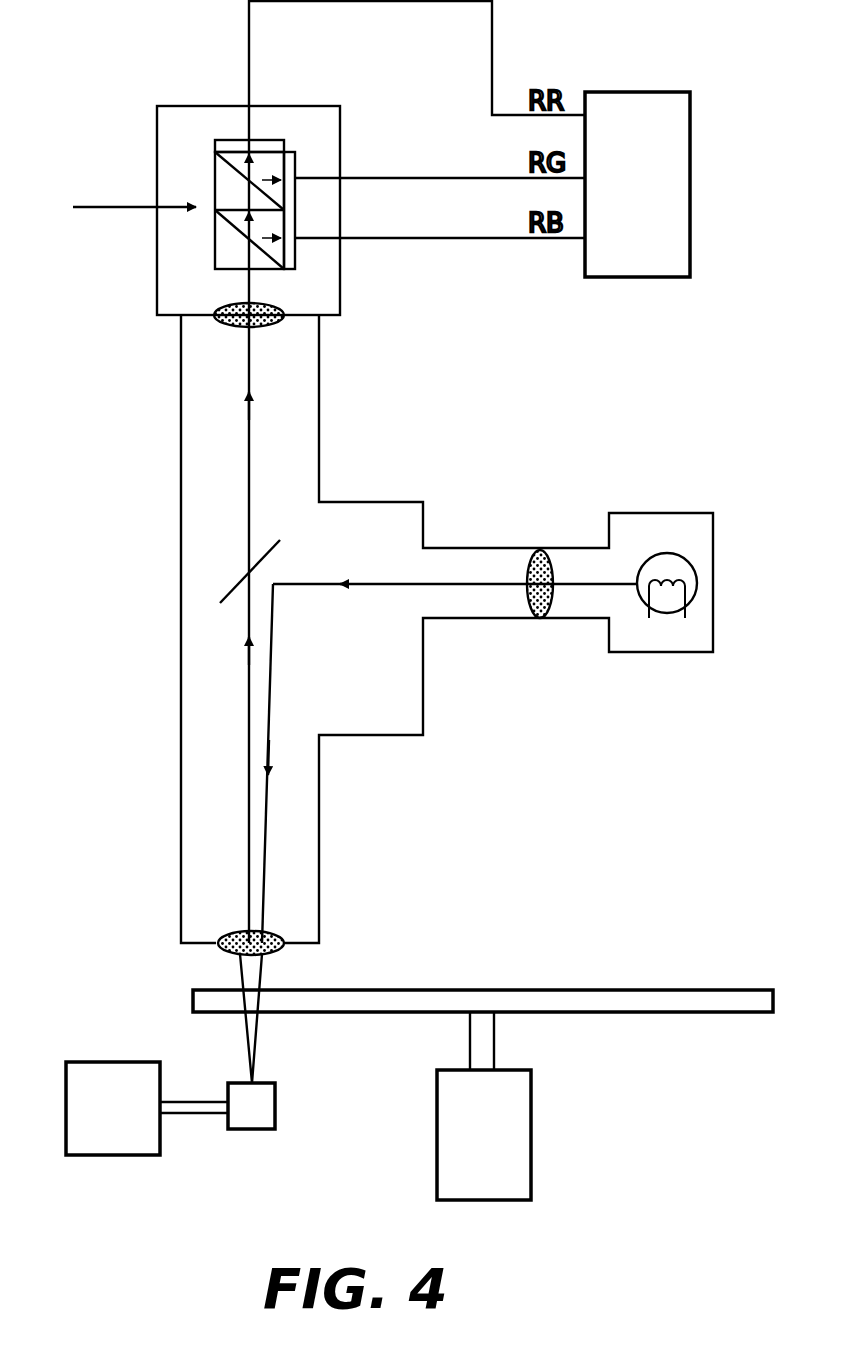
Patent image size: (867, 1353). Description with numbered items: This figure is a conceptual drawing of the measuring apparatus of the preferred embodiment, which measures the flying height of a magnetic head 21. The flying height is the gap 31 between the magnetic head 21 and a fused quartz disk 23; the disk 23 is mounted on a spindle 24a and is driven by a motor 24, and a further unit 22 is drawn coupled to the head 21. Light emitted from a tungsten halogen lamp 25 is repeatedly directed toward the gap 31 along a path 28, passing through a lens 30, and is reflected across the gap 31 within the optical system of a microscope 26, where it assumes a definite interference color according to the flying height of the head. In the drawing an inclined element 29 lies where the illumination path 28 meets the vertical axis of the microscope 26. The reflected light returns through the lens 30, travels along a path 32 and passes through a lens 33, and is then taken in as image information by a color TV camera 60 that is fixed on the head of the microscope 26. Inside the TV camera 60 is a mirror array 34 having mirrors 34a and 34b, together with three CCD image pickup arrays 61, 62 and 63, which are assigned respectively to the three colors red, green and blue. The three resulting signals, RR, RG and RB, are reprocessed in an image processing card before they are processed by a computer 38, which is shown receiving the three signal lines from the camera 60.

The magnetic head 21 is at (268, 1110).
The laser drive circuit 22 is at (147, 1108).
The fused quartz disk 23 is at (711, 1013).
The motor 24 is at (484, 1135).
The spindle 24a is at (496, 1040).
The tungsten halogen lamp 25 is at (690, 562).
The microscope 26 is at (320, 397).
The path 28 is at (274, 680).
The half mirror 29 is at (228, 592).
The lens 30 is at (276, 935).
The gap 31 is at (258, 1040).
The path 32 is at (246, 736).
The lens 33 is at (238, 330).
The mirror array 34 is at (113, 208).
The mirror 34a is at (215, 232).
The mirror 34b is at (215, 168).
The computer 38 is at (637, 184).
The color TV camera 60 is at (180, 108).
The CCD image pickup array 61 is at (295, 262).
The CCD image pickup array 62 is at (295, 160).
The CCD image pickup array 63 is at (273, 140).